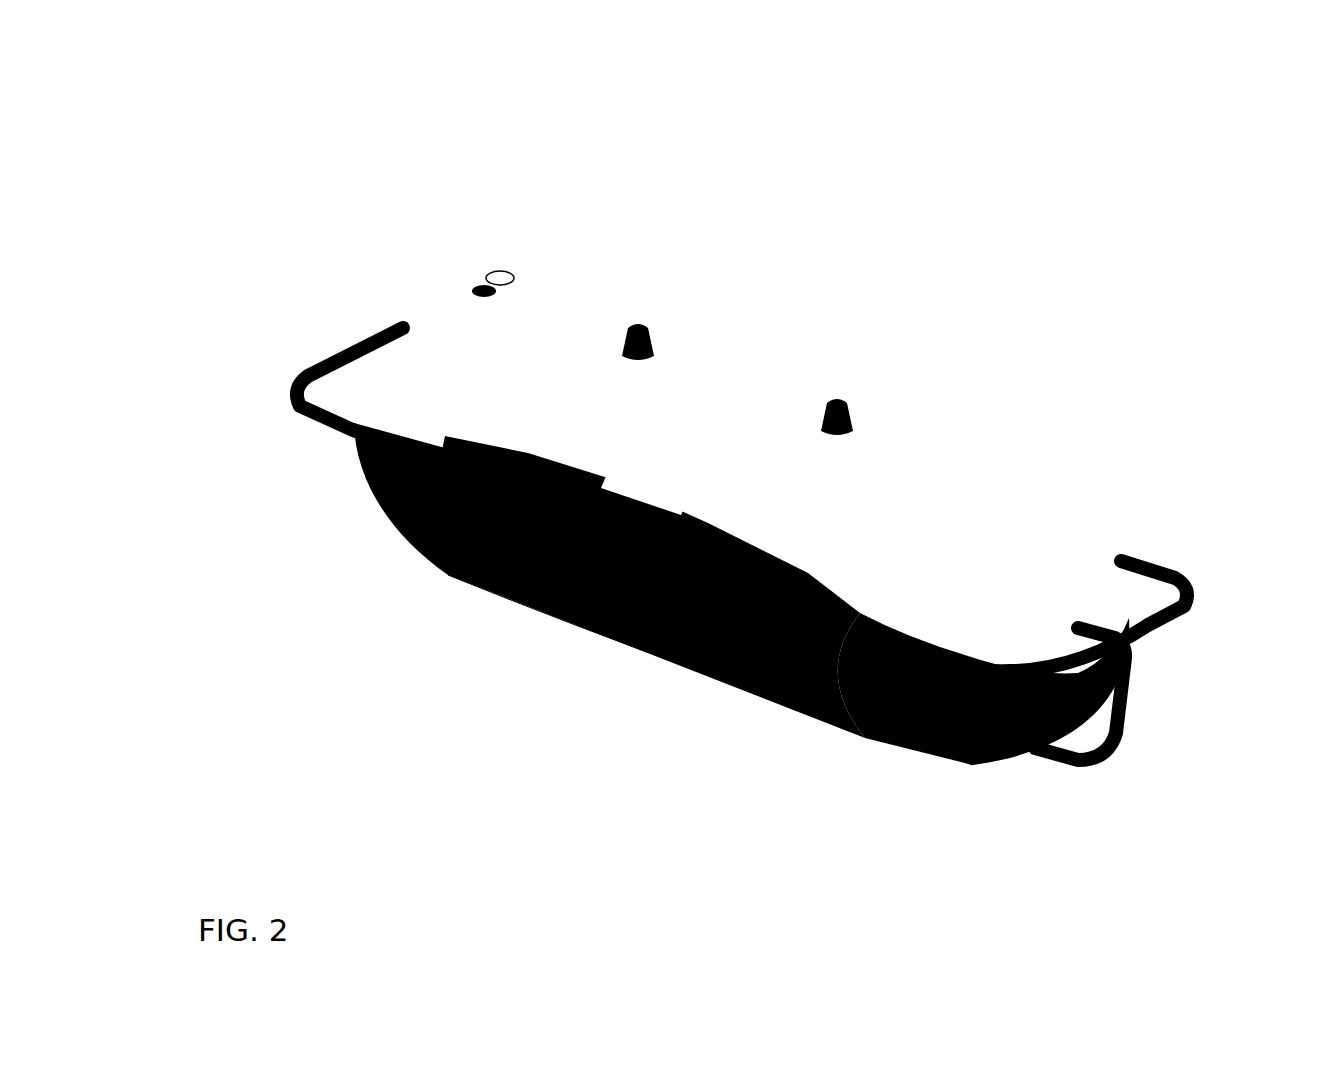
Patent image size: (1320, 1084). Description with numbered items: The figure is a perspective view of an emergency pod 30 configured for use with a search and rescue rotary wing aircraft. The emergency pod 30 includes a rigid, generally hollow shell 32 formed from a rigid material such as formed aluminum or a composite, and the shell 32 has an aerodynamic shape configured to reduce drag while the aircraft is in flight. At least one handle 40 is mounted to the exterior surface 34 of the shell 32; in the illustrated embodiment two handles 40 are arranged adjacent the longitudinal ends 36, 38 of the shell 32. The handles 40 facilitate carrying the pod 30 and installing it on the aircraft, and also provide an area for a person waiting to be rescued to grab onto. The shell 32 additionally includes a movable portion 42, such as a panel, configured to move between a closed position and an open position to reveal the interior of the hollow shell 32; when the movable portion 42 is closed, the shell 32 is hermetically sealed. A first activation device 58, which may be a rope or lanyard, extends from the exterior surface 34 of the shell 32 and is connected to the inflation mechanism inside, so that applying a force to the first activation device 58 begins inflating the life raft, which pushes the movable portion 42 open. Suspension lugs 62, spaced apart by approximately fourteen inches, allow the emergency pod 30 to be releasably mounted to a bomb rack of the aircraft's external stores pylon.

The emergency pod 30 is at (250, 192).
The shell 32 is at (588, 288).
The exterior surface 34 is at (945, 485).
The longitudinal end 36 is at (396, 340).
The longitudinal end 38 is at (1070, 586).
The handle 40 is at (348, 337).
The movable portion 42 is at (690, 650).
The first activation device 58 is at (491, 264).
The suspension lugs 62 is at (668, 333).